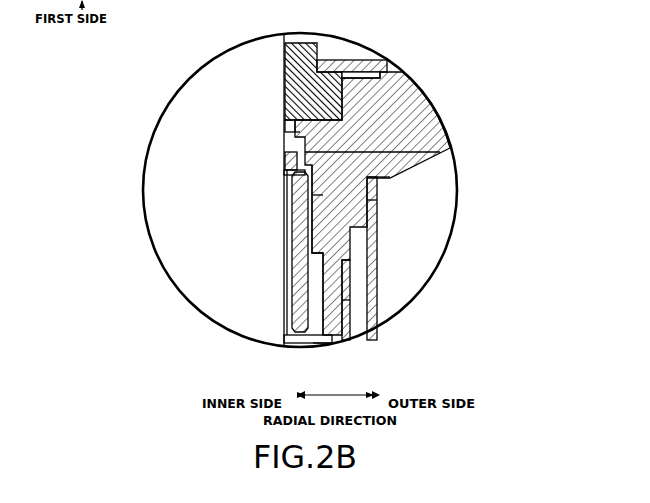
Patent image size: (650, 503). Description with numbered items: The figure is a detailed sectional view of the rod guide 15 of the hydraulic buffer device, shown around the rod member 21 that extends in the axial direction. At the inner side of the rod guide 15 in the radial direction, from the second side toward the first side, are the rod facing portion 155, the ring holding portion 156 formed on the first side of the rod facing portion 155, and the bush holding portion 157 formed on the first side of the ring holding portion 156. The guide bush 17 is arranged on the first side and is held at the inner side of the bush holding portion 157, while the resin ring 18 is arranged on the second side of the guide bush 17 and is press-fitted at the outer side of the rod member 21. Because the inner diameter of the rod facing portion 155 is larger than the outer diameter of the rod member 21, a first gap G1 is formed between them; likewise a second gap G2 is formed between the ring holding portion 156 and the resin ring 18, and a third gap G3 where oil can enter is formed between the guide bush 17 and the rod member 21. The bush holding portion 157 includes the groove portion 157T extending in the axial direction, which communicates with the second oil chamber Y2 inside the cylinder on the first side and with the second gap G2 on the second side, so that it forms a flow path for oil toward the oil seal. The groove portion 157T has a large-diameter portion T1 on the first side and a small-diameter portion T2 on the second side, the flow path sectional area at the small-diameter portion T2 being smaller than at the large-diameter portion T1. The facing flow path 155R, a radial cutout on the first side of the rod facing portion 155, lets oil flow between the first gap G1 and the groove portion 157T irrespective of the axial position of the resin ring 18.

The rod guide 15 is at (434, 130).
The guide bush 17 is at (310, 195).
The resin ring 18 is at (282, 161).
The rod member 21 is at (294, 297).
The rod facing portion 155 is at (298, 140).
The facing flow path 155R is at (297, 141).
The ring holding portion 156 is at (305, 155).
The bush holding portion 157 is at (310, 183).
The groove portion 157T is at (471, 275).
The first gap G1 is at (293, 130).
The second gap G2 is at (288, 137).
The third gap G3 is at (286, 217).
The large-diameter portion T1 is at (315, 310).
The small-diameter portion T2 is at (310, 223).
The second oil chamber Y2 is at (321, 336).